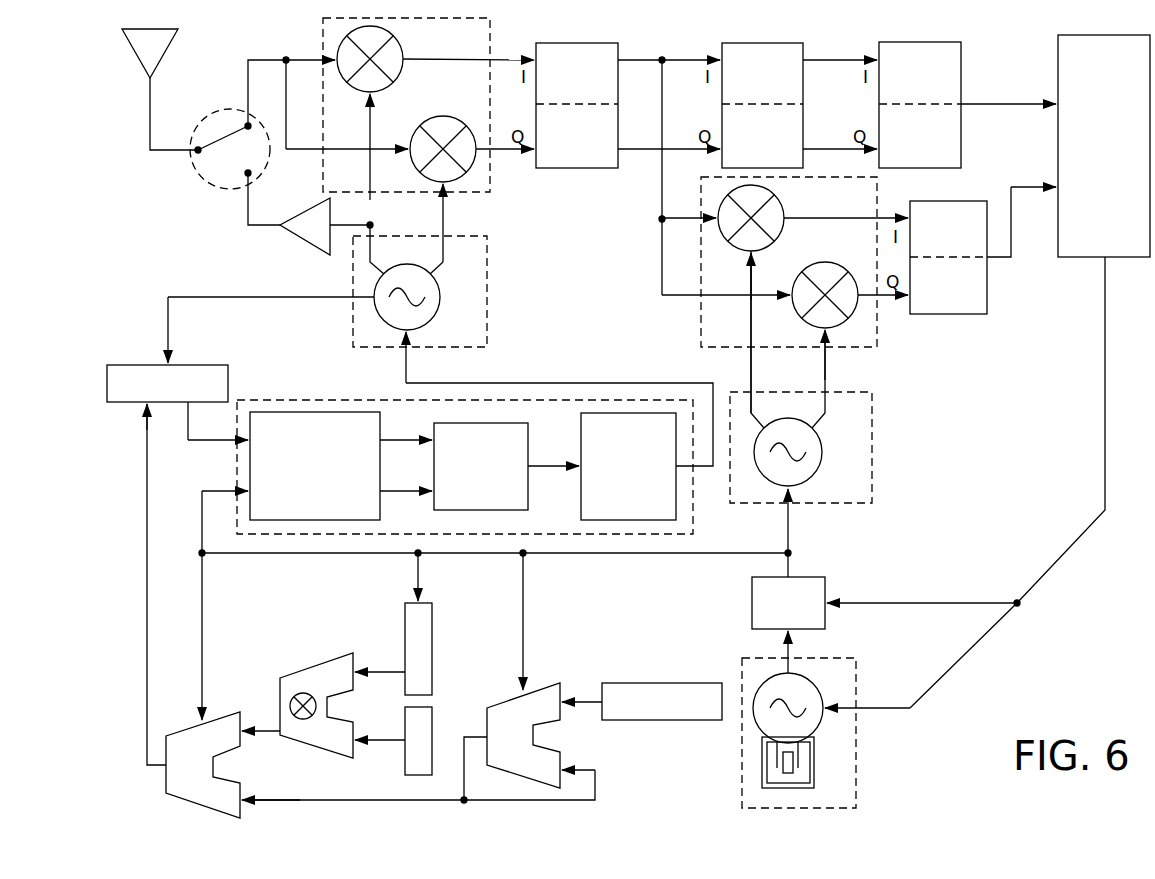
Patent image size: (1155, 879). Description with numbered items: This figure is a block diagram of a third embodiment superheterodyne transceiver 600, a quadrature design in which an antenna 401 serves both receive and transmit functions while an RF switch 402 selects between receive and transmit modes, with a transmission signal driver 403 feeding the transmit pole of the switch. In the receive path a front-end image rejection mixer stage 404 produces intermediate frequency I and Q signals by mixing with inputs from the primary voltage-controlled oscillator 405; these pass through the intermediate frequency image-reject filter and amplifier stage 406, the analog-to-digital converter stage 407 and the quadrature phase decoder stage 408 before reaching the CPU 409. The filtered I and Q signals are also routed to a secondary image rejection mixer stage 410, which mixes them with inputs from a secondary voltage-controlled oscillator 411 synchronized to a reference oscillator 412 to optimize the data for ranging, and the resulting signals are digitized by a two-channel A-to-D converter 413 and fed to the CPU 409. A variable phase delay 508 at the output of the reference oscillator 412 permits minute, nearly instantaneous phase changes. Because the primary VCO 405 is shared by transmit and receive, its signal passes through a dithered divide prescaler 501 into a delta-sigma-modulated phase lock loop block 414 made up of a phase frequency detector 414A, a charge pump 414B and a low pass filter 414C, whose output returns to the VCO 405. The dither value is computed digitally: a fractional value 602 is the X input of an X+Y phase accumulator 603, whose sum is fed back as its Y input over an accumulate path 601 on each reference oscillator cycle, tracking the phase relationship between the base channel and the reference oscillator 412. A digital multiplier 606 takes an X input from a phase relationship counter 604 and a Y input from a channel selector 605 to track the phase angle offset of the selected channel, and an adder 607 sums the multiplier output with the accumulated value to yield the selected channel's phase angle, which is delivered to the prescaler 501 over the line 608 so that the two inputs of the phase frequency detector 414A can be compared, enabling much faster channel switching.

The antenna 401 is at (150, 42).
The RF switch 402 is at (210, 180).
The transmission signal driver 403 is at (312, 230).
The front-end image rejection mixer stage 404 is at (470, 94).
The primary voltage-controlled oscillator 405 is at (487, 308).
The intermediate frequency image-reject filter and amplifier stage 406 is at (618, 50).
The analog-to-digital converter stage 407 is at (803, 50).
The quadrature phase decoder stage 408 is at (961, 55).
The CPU 409 is at (1085, 174).
The secondary image rejection mixer stage 410 is at (701, 322).
The secondary voltage-controlled oscillator 411 is at (872, 418).
The reference oscillator 412 is at (856, 778).
The two-channel A-to-D converter 413 is at (987, 290).
The phase lock loop block 414 is at (336, 400).
The phase frequency detector 414A is at (292, 513).
The charge pump 414B is at (458, 500).
The low pass filter 414C is at (605, 510).
The dithered divide prescaler 501 is at (155, 362).
The variable phase delay 508 is at (825, 576).
The third embodiment superheterodyne transceiver 600 is at (1072, 630).
The accumulate path 601 is at (595, 783).
The fractional value 602 is at (662, 720).
The phase accumulator 603 is at (505, 700).
The phase relationship counter 604 is at (405, 618).
The channel selector 605 is at (405, 760).
The digital multiplier 606 is at (297, 672).
The adder 607 is at (182, 798).
The divider control line 608 is at (147, 592).